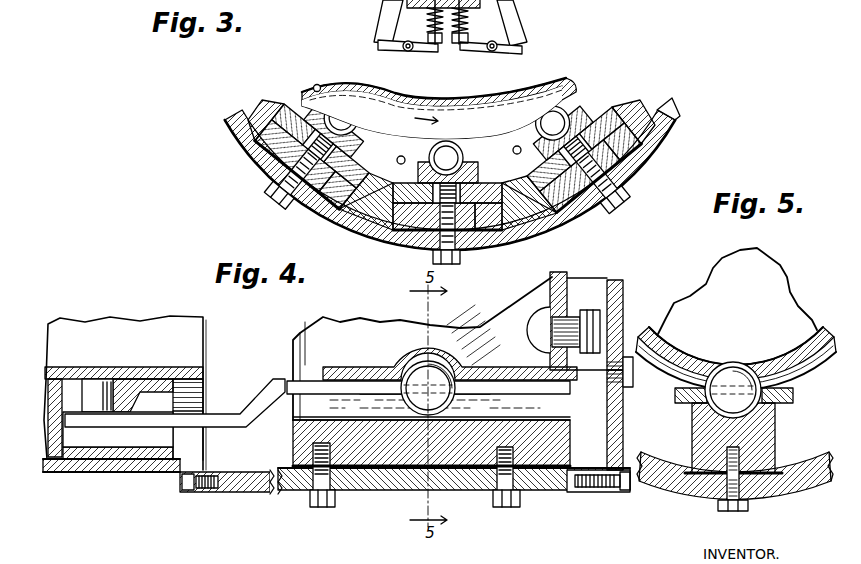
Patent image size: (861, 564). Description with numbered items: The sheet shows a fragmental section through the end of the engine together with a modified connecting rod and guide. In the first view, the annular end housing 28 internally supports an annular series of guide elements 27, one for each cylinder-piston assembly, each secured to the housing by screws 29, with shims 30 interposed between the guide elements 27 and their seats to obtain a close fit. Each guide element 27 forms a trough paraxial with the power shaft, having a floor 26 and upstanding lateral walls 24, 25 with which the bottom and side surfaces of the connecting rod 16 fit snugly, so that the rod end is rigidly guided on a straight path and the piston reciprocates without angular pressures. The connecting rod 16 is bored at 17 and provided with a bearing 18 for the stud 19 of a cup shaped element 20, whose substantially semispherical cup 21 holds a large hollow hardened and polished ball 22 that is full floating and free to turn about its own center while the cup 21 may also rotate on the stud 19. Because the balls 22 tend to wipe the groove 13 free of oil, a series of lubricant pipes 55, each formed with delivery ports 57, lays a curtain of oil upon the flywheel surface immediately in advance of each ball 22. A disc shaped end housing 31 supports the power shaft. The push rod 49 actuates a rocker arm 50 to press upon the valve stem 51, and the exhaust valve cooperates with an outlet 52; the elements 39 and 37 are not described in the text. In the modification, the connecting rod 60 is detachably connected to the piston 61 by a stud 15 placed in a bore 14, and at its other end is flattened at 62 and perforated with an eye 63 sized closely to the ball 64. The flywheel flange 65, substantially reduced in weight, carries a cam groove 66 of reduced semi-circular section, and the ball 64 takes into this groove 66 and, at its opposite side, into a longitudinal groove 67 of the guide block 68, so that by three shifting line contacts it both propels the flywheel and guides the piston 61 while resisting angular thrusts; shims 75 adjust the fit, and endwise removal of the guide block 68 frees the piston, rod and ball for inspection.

In FIG. 3, the groove 13 is at (523, 96).
In FIG. 3, the connecting rod 16 is at (403, 188).
In FIG. 3, the bore 17 is at (502, 190).
In FIG. 3, the bearing 18 is at (300, 197).
In FIG. 3, the stud 19 is at (273, 153).
In FIG. 3, the cup shaped element 20 is at (479, 172).
In FIG. 3, the cup 21 is at (430, 170).
In FIG. 3, the ball 22 is at (448, 142).
In FIG. 3, the lateral wall 24 is at (502, 204).
In FIG. 3, the lateral wall 25 is at (402, 200).
In FIG. 3, the floor 26 is at (325, 208).
In FIG. 3, the guide element 27 is at (362, 227).
In FIG. 3, the annular end housing 28 is at (672, 108).
In FIG. 3, the screw 29 is at (452, 263).
In FIG. 3, the shim 30 is at (262, 133).
In FIG. 3, the head block 39 is at (560, 0).
In FIG. 3, the push rod 49 is at (522, 30).
In FIG. 3, the rocker arm 50 is at (506, 48).
In FIG. 3, the valve stem 51 is at (470, 24).
In FIG. 3, the outlet 52 is at (422, 6).
In FIG. 3, the lubricant pipe 55 is at (316, 84).
In FIG. 3, the delivery port 57 is at (320, 83).
In FIG. 4, the bore 14 is at (143, 367).
In FIG. 4, the stud 15 is at (100, 385).
In FIG. 4, the disc shaped end housing 31 is at (614, 283).
In FIG. 4, the adjusting screw 37 is at (600, 330).
In FIG. 4, the connecting rod 60 is at (238, 427).
In FIG. 5, the connecting rod 60 is at (798, 404).
In FIG. 4, the piston 61 is at (156, 451).
In FIG. 4, the flattened portion 62 is at (481, 398).
In FIG. 5, the flattened portion 62 is at (800, 390).
In FIG. 4, the eye 63 is at (380, 384).
In FIG. 5, the eye 63 is at (778, 405).
In FIG. 4, the ball 64 is at (403, 358).
In FIG. 5, the ball 64 is at (738, 372).
In FIG. 4, the flywheel flange 65 is at (285, 381).
In FIG. 5, the flywheel flange 65 is at (812, 325).
In FIG. 4, the cam groove 66 is at (470, 375).
In FIG. 5, the cam groove 66 is at (672, 363).
In FIG. 4, the longitudinal groove 67 is at (556, 413).
In FIG. 5, the longitudinal groove 67 is at (765, 475).
In FIG. 4, the guide block 68 is at (373, 453).
In FIG. 5, the guide block 68 is at (697, 443).
In FIG. 4, the shim 75 is at (390, 467).
In FIG. 5, the shim 75 is at (708, 475).